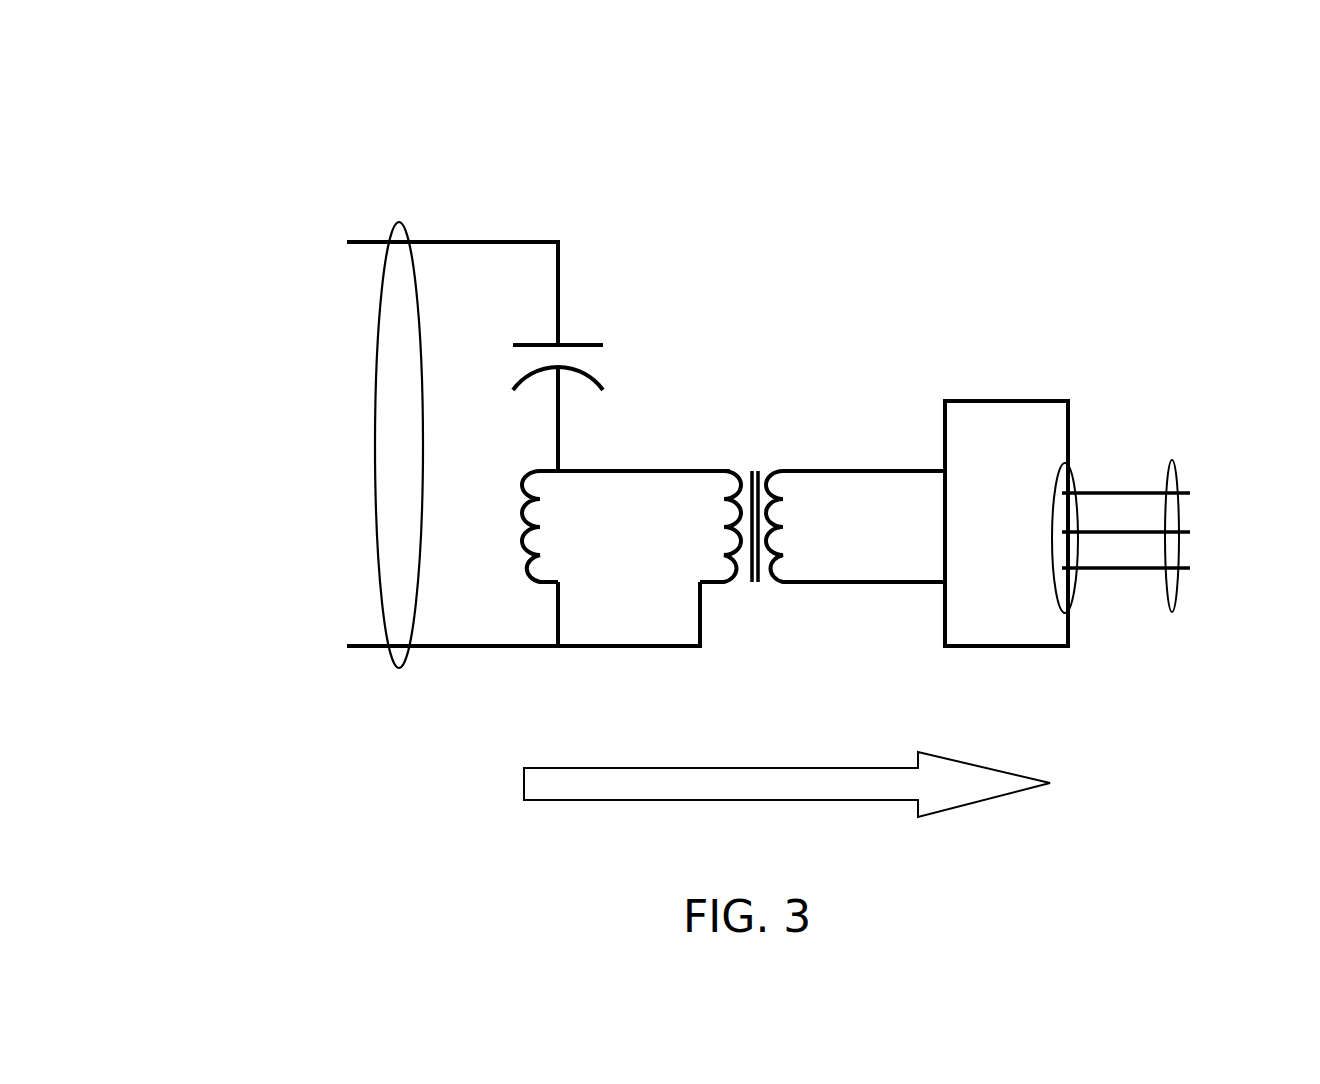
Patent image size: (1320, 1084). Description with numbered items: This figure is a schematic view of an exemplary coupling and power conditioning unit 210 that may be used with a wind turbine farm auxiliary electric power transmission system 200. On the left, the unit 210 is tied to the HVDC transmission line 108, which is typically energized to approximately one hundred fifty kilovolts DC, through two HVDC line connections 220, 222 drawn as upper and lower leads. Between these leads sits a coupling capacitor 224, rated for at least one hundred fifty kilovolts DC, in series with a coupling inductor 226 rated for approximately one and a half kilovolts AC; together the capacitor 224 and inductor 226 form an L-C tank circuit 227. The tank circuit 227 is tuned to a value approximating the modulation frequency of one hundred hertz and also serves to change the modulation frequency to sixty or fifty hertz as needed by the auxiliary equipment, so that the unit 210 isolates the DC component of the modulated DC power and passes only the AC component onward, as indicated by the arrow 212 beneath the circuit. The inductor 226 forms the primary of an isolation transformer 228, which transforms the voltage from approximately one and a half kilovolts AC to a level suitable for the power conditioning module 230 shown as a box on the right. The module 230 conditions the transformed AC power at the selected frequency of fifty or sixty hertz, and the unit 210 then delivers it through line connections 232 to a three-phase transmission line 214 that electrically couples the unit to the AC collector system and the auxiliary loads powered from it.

The HVDC transmission line 108 is at (375, 412).
The wind turbine farm auxiliary electric power transmission system 200 is at (245, 168).
The coupling and power conditioning unit 210 is at (413, 198).
The arrow 212 is at (607, 800).
The three-phase transmission line 214 is at (1180, 475).
The HVDC line connection 220 is at (479, 242).
The HVDC line connection 222 is at (437, 646).
The coupling capacitor 224 is at (588, 345).
The coupling inductor 226 is at (533, 582).
The L-C tank circuit 227 is at (597, 430).
The isolation transformer 228 is at (762, 465).
The power conditioning module 230 is at (1028, 535).
The line connections 232 is at (1078, 482).